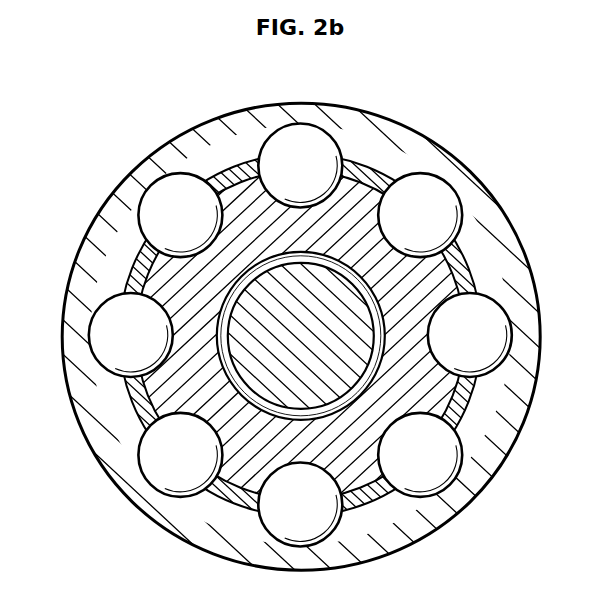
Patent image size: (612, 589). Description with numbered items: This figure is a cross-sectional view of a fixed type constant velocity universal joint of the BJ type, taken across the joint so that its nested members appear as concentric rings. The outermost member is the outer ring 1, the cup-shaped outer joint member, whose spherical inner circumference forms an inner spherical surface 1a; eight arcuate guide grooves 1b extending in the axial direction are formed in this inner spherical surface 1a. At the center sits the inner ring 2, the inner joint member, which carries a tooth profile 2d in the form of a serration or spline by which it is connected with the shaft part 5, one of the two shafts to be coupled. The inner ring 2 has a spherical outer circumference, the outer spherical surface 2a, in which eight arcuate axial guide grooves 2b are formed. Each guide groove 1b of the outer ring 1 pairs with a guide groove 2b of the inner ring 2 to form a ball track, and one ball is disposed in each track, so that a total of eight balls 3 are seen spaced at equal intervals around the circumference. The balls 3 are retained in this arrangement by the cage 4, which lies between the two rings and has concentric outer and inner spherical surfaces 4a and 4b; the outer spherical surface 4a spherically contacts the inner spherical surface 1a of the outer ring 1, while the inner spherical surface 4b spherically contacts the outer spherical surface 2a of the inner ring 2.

The outer ring 1 is at (166, 140).
The inner spherical surface 1a is at (128, 198).
The guide grooves 1b is at (150, 215).
The inner ring 2 is at (306, 294).
The outer spherical surface 2a is at (458, 250).
The guide grooves 2b is at (403, 235).
The tooth profile 2d is at (347, 284).
The balls 3 is at (273, 302).
The cage 4 is at (306, 294).
The outer spherical surface 4a is at (120, 400).
The inner spherical surface 4b is at (140, 445).
The shaft part 5 is at (297, 358).